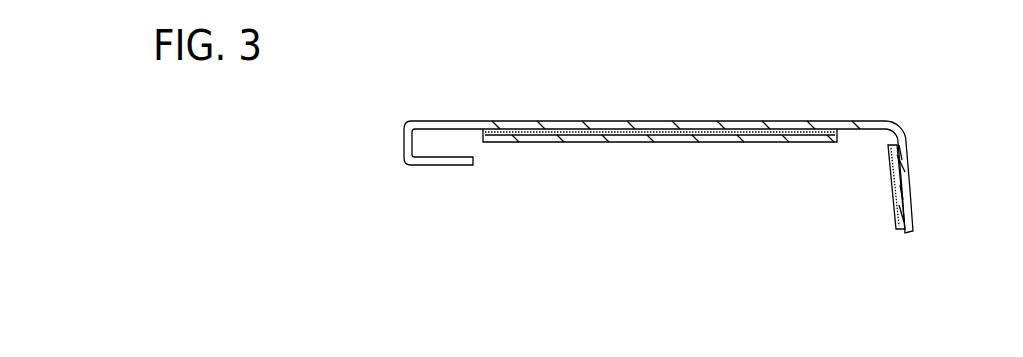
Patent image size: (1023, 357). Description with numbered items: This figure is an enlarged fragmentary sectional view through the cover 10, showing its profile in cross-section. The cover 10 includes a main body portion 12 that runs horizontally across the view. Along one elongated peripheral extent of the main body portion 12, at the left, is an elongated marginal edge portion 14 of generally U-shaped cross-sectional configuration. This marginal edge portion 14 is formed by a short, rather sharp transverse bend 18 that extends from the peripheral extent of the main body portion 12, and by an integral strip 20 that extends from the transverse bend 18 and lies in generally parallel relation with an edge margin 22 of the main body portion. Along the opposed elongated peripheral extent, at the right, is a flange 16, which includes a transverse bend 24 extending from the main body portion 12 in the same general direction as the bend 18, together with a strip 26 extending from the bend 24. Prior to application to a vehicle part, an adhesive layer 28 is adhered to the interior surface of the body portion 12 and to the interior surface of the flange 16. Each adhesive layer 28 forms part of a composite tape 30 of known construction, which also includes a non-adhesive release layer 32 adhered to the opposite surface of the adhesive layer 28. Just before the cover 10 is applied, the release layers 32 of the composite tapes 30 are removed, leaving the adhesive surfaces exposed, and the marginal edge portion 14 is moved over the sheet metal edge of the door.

The cover 10 is at (665, 162).
The main body portion 12 is at (665, 121).
The marginal edge portion 14 is at (405, 165).
The flange 16 is at (913, 175).
The transverse bend 18 is at (403, 148).
The strip 20 is at (433, 160).
The edge margin 22 is at (452, 126).
The transverse bend 24 is at (903, 131).
The strip 26 is at (913, 205).
The adhesive layer 28 is at (557, 128).
The composite tape 30 is at (683, 144).
The release layer 32 is at (746, 142).